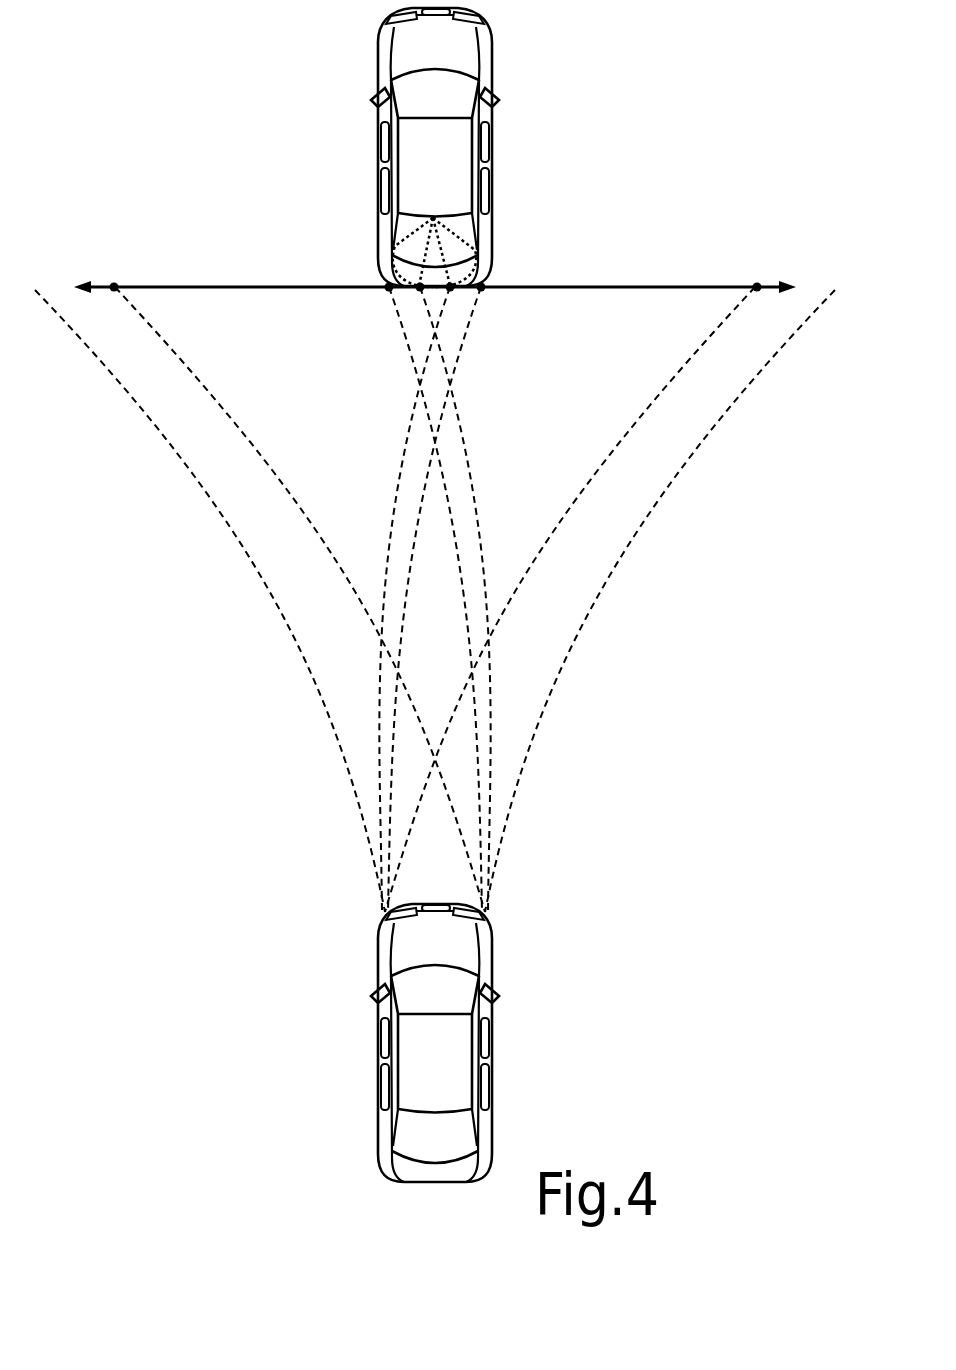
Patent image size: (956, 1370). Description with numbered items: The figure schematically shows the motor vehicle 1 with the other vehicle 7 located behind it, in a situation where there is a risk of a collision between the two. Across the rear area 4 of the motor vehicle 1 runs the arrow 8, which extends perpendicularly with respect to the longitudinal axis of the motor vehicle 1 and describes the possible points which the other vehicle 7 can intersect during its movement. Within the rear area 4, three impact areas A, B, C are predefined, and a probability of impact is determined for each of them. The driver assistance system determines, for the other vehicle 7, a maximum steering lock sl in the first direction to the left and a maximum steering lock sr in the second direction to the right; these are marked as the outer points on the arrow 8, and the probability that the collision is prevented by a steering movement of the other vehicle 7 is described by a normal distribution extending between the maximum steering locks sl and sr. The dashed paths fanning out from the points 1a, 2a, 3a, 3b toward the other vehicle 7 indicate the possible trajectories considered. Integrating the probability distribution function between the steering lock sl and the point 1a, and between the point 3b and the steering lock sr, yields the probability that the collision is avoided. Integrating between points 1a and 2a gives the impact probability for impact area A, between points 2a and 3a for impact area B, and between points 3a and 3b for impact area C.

The motor vehicle 1 is at (378, 80).
The point 1a is at (388, 288).
The point 2a is at (419, 288).
The point 3a is at (451, 288).
The point 3b is at (482, 288).
The rear area 4 is at (369, 383).
The other vehicle 7 is at (378, 1034).
The arrow 8 is at (628, 285).
The impact area A is at (398, 249).
The impact area B is at (432, 257).
The impact area C is at (465, 265).
The maximum steering lock sl is at (113, 284).
The maximum steering lock sr is at (757, 284).